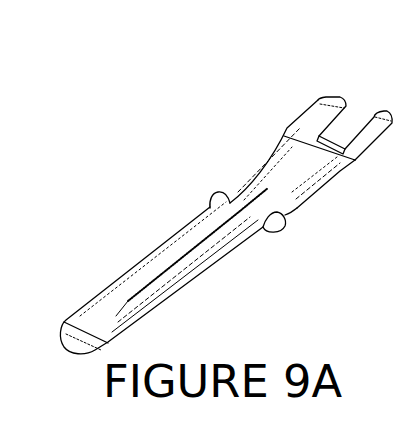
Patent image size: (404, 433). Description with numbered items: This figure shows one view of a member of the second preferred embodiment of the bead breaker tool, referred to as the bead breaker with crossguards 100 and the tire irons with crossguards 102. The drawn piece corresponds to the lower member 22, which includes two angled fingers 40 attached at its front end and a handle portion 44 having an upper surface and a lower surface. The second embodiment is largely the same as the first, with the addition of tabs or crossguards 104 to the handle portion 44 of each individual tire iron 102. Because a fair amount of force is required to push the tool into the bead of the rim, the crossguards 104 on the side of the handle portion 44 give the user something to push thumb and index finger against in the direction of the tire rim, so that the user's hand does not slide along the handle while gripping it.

The bead breaker with crossguards 100 is at (226, 183).
The tire iron with crossguards 102 is at (253, 70).
The lower member 22 is at (302, 185).
The angled fingers 40 is at (380, 119).
The handle portion 44 is at (177, 263).
The crossguards 104 is at (278, 215).